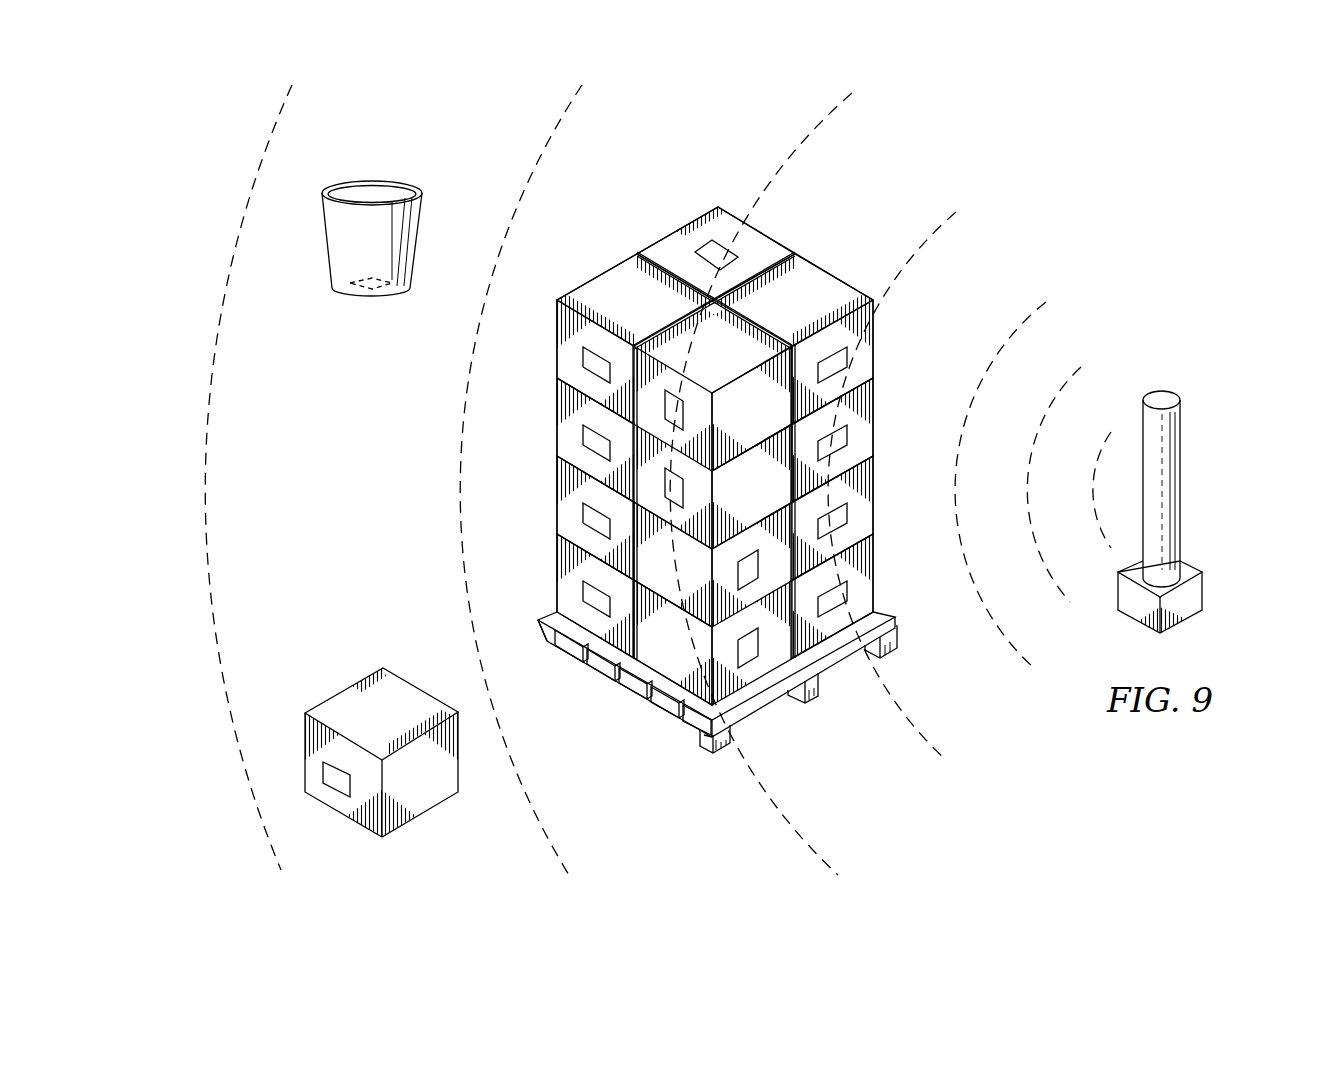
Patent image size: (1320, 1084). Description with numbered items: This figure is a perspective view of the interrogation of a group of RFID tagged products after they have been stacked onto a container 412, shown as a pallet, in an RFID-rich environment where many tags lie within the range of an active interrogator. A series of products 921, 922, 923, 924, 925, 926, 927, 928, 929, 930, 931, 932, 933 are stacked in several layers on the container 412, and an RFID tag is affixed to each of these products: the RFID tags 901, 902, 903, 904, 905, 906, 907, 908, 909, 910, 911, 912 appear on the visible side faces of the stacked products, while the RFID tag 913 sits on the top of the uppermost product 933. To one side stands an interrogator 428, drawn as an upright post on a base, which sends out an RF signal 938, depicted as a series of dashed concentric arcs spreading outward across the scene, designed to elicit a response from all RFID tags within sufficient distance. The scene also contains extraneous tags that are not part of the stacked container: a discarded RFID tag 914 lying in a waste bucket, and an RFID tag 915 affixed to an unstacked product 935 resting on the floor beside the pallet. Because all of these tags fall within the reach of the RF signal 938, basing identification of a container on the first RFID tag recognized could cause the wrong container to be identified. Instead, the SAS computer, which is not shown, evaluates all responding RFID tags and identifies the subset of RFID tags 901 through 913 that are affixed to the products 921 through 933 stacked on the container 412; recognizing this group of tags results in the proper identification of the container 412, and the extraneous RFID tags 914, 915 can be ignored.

The container 412 is at (588, 670).
The interrogator 428 is at (1182, 487).
The RFID tag 901 is at (835, 612).
The RFID tag 902 is at (748, 657).
The RFID tag 903 is at (582, 593).
The RFID tag 904 is at (847, 518).
The RFID tag 905 is at (750, 582).
The RFID tag 906 is at (582, 517).
The RFID tag 907 is at (847, 438).
The RFID tag 908 is at (663, 484).
The RFID tag 909 is at (583, 437).
The RFID tag 910 is at (847, 356).
The RFID tag 911 is at (672, 400).
The RFID tag 912 is at (583, 357).
The RFID tag 913 is at (720, 252).
The discarded RFID tag 914 is at (358, 292).
The RFID tag 915 is at (335, 782).
The product 921 is at (873, 586).
The product 922 is at (651, 661).
The product 923 is at (558, 564).
The product 924 is at (873, 477).
The product 925 is at (651, 581).
The product 926 is at (558, 470).
The product 927 is at (873, 396).
The product 928 is at (729, 500).
The product 929 is at (558, 395).
The product 930 is at (852, 297).
The product 931 is at (729, 421).
The product 932 is at (582, 297).
The product 933 is at (663, 250).
The unstacked product 935 is at (377, 758).
The RF signal 938 is at (212, 372).